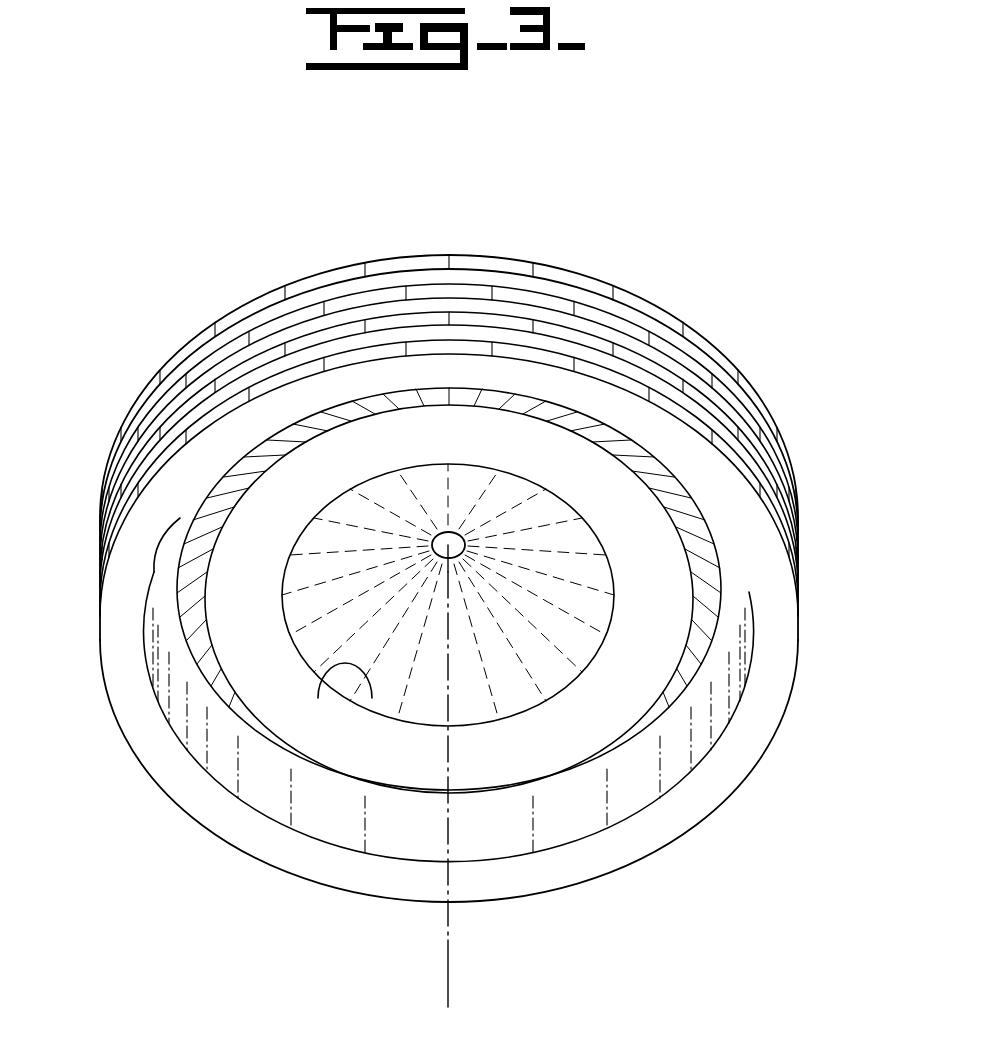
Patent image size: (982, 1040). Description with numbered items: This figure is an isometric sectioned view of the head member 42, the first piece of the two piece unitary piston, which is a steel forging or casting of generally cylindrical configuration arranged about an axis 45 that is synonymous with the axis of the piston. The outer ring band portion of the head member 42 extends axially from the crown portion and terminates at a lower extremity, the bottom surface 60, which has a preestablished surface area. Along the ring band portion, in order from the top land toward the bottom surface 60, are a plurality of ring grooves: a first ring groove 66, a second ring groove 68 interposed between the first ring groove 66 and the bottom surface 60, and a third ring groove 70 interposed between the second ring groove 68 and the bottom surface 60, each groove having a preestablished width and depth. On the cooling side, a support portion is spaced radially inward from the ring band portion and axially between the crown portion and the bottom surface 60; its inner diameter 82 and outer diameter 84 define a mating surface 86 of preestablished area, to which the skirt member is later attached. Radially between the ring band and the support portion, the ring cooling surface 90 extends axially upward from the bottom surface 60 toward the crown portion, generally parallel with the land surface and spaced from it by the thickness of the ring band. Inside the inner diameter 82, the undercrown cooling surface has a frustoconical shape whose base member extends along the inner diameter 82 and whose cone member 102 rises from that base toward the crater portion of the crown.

The head member 42 is at (780, 768).
The axis 45 is at (448, 953).
The bottom surface 60 is at (781, 609).
The first ring groove 66 is at (268, 317).
The second ring groove 68 is at (231, 367).
The third ring groove 70 is at (227, 402).
The inner diameter 82 is at (368, 668).
The outer diameter 84 is at (192, 595).
The mating surface 86 is at (376, 445).
The ring cooling surface 90 is at (400, 824).
The cone member 102 is at (541, 624).